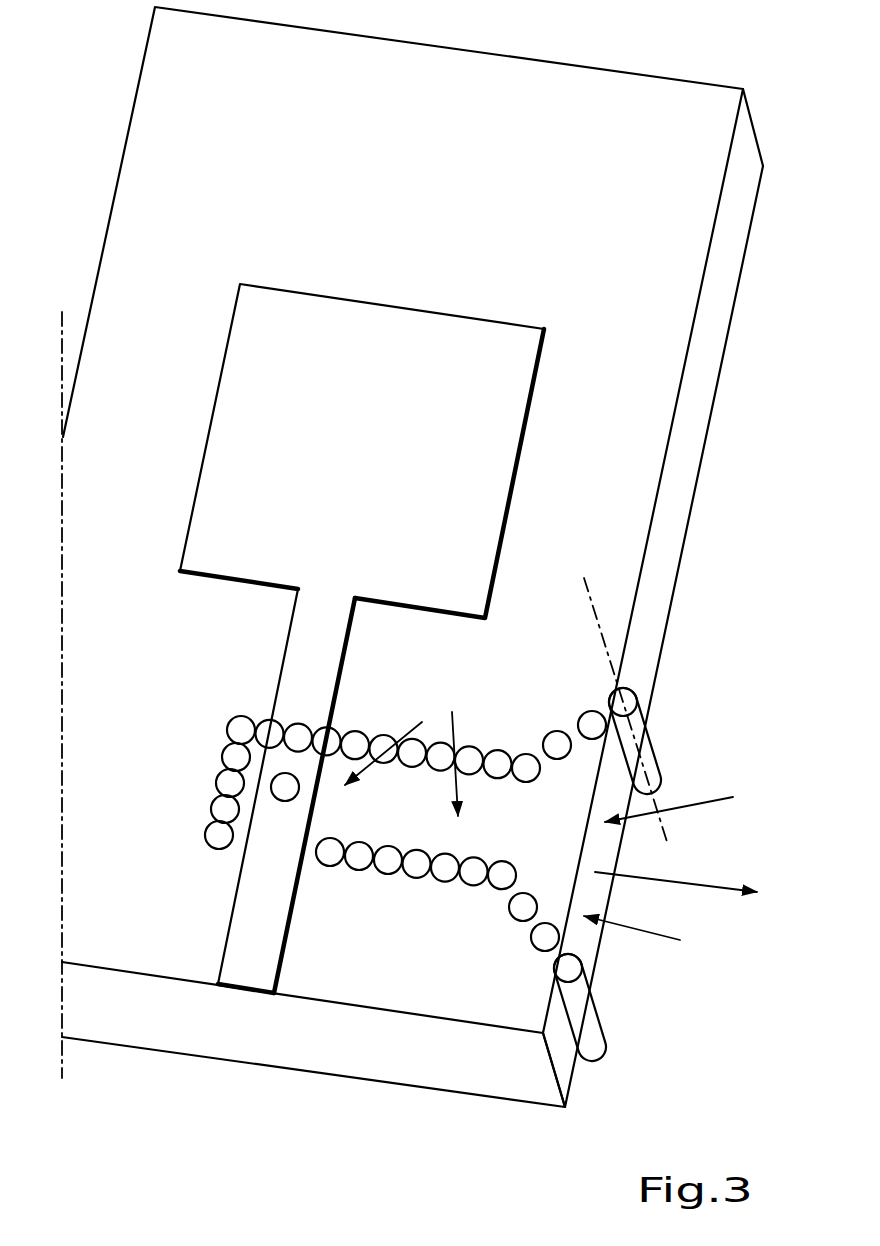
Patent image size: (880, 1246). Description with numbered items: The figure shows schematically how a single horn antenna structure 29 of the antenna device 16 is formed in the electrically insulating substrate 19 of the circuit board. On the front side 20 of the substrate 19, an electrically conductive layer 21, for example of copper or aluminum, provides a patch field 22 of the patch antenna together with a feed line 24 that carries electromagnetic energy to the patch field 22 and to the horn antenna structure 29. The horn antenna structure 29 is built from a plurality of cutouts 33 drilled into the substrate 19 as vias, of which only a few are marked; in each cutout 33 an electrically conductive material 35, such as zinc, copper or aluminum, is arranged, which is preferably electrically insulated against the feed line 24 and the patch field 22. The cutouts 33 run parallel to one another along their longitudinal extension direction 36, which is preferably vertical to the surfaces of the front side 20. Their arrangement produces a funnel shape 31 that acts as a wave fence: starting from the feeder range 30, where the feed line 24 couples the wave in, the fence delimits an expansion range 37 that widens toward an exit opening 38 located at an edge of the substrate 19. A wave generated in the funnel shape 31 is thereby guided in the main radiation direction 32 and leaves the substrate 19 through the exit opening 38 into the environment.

The antenna device 16 is at (788, 93).
The substrate 19 is at (132, 1030).
The front side 20 is at (598, 113).
The electrically conductive layer 21 is at (247, 975).
The patch field 22 is at (213, 410).
The feed line 24 is at (283, 655).
The horn antenna structure 29 is at (510, 748).
The feeder range 30 is at (388, 736).
The funnel shape 31 is at (650, 939).
The main radiation direction 32 is at (699, 880).
The cutout 33 is at (590, 718).
The electrically conductive material 35 is at (289, 784).
The longitudinal extension direction 36 is at (592, 597).
The expansion range 37 is at (452, 745).
The exit opening 38 is at (685, 797).